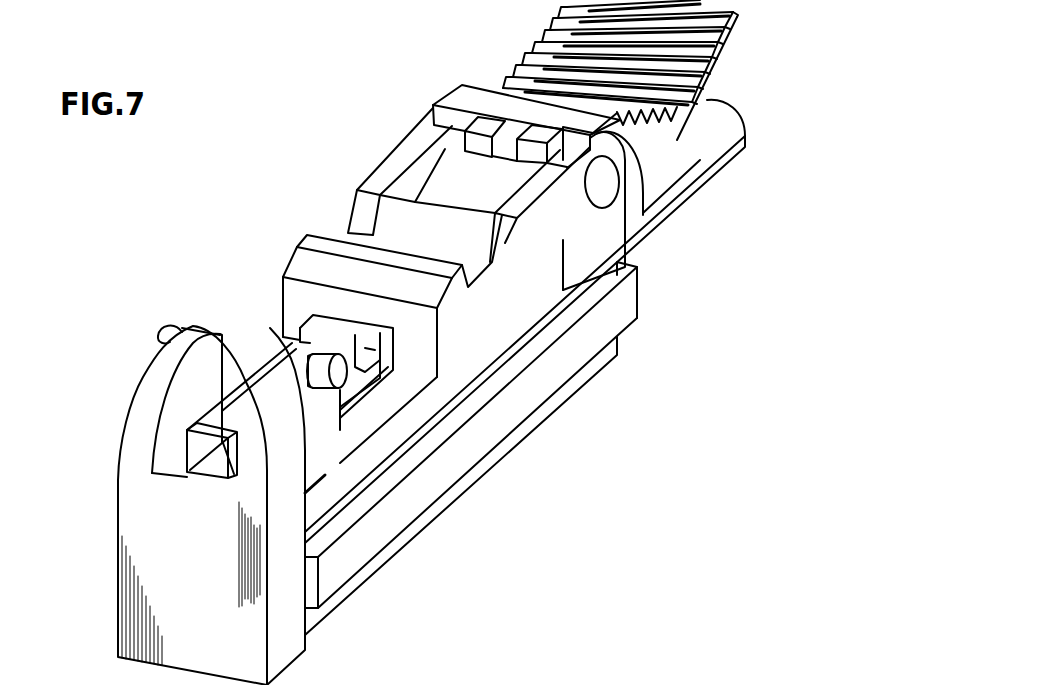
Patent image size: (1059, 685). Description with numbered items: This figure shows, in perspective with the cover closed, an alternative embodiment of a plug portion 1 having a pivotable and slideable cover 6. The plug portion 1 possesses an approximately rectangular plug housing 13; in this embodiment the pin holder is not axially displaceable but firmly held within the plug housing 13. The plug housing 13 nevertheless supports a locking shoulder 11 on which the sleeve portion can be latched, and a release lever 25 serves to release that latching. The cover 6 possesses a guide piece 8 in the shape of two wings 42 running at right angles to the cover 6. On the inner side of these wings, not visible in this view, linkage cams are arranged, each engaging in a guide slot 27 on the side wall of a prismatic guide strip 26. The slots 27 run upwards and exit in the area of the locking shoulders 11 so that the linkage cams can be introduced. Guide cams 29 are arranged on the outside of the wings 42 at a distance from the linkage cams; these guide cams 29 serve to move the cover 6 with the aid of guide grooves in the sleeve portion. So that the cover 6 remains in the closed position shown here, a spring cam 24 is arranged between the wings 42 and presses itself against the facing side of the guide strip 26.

The plug portion 1 is at (178, 218).
The cover 6 is at (130, 520).
The guide piece 8 is at (125, 400).
The locking shoulder 11 is at (300, 263).
The plug housing 13 is at (532, 293).
The spring cam 24 is at (205, 455).
The release lever 25 is at (723, 63).
The guide strip 26 is at (331, 327).
The guide slot 27 is at (367, 380).
The guide cam 29 is at (308, 356).
The wing 42 is at (323, 463).